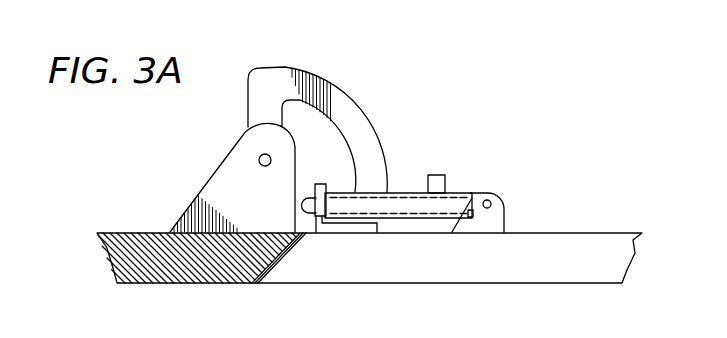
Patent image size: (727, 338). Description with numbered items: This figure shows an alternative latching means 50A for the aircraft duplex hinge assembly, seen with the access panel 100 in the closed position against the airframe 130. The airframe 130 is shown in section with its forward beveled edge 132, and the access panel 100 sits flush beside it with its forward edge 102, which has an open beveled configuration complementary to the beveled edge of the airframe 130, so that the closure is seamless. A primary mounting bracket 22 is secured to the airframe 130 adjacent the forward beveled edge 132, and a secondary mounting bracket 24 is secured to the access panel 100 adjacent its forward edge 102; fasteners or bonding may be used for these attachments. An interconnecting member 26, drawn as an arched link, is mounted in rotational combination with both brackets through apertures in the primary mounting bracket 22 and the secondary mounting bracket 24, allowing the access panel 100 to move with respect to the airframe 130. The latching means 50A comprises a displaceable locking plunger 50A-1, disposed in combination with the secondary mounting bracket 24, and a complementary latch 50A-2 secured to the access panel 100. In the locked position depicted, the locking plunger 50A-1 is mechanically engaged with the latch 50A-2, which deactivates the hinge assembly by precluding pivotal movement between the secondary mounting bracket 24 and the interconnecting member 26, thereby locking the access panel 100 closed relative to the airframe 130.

The primary mounting bracket 22 is at (192, 174).
The secondary mounting bracket 24 is at (496, 225).
The interconnecting member 26 is at (372, 109).
The latching means 50A is at (452, 170).
The locking plunger 50A-1 is at (397, 203).
The latch 50A-2 is at (320, 185).
The access panel 100 is at (467, 273).
The airframe 130 is at (209, 271).
The forward beveled edge 132 is at (276, 285).
The forward edge 102 is at (280, 252).